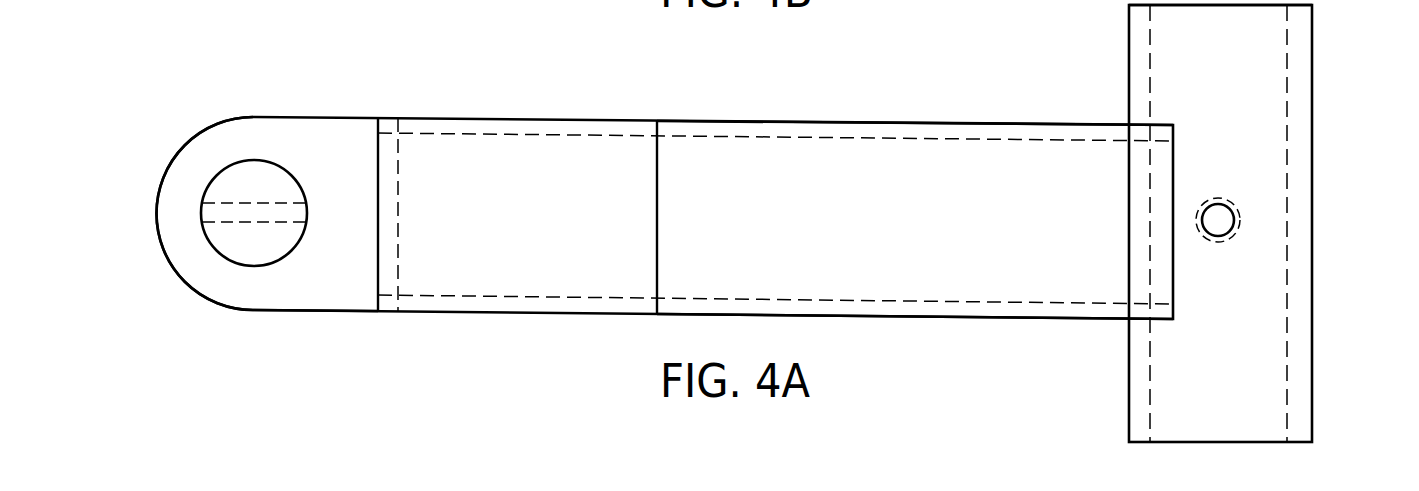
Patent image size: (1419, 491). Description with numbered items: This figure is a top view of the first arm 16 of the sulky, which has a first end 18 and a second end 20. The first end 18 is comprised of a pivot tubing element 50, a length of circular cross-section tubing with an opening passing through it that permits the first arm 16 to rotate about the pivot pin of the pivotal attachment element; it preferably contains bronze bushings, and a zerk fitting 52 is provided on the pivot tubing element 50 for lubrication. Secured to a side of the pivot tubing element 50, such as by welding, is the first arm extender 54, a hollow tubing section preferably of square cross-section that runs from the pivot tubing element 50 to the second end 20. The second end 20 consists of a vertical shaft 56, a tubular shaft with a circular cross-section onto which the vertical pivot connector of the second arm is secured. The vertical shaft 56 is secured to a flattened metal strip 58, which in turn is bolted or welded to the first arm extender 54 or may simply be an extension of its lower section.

The first arm 16 is at (535, 113).
The first end 18 is at (1313, 150).
The second end 20 is at (207, 318).
The pivot tubing element 50 is at (1250, 70).
The zerk fitting 52 is at (1227, 222).
The first arm extender 54 is at (765, 168).
The vertical shaft 56 is at (268, 185).
The flattened metal strip 58 is at (336, 288).